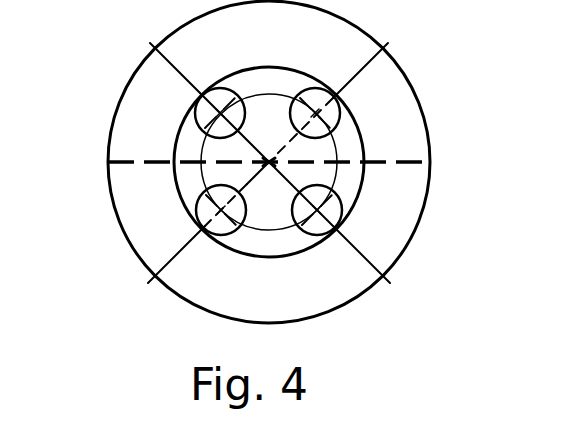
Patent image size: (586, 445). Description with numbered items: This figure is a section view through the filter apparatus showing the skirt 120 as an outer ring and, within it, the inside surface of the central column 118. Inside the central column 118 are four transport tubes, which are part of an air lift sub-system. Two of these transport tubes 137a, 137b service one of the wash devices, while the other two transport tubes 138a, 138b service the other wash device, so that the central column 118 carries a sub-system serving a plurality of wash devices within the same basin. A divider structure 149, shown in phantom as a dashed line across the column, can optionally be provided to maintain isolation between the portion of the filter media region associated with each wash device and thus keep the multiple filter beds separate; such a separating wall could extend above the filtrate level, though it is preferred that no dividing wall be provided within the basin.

The central column 118 is at (343, 298).
The skirt 120 is at (174, 298).
The divider structure 149 is at (387, 160).
The transport tube 137a is at (198, 214).
The transport tube 137b is at (343, 203).
The transport tube 138a is at (197, 108).
The transport tube 138b is at (340, 113).